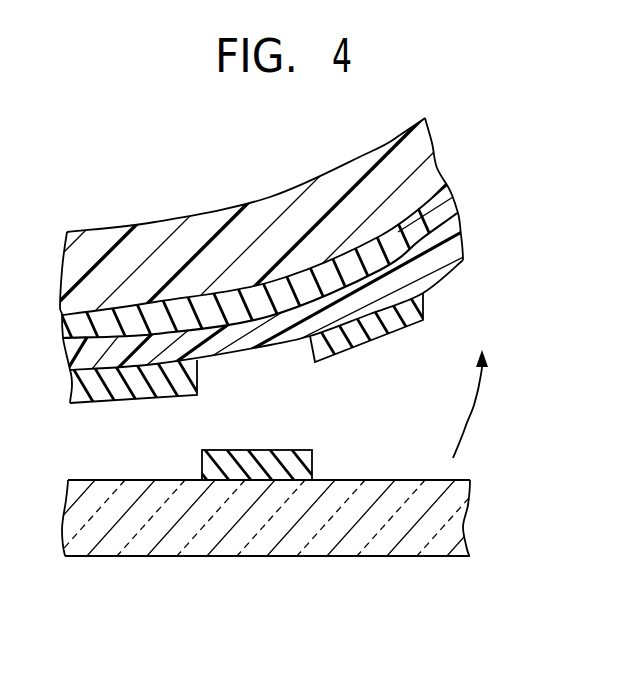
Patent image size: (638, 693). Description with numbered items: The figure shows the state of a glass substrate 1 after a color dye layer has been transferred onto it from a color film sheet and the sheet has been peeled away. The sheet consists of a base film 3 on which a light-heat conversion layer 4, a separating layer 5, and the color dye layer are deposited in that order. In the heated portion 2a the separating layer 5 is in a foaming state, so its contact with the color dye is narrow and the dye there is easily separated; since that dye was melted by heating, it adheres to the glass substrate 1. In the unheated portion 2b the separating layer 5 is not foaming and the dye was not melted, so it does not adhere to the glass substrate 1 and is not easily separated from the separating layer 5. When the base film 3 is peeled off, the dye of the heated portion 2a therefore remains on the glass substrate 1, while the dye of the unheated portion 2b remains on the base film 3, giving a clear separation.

The glass substrate 1 is at (447, 513).
The heated portion 2a is at (302, 463).
The unheated portion 2b is at (423, 307).
The base film 3 is at (405, 162).
The light-heat conversion layer 4 is at (445, 225).
The separating layer 5 is at (447, 255).